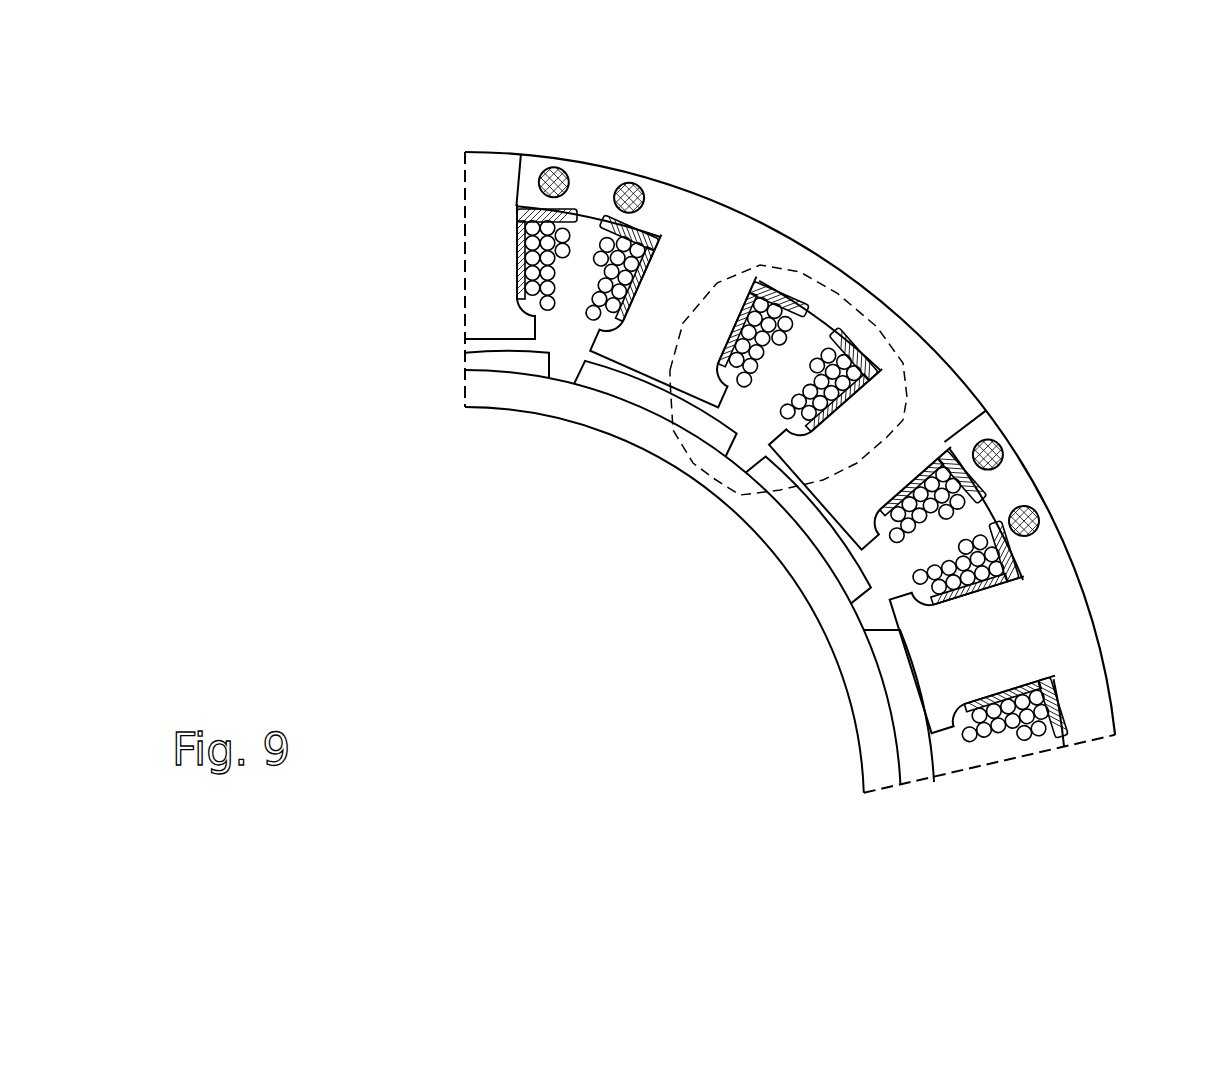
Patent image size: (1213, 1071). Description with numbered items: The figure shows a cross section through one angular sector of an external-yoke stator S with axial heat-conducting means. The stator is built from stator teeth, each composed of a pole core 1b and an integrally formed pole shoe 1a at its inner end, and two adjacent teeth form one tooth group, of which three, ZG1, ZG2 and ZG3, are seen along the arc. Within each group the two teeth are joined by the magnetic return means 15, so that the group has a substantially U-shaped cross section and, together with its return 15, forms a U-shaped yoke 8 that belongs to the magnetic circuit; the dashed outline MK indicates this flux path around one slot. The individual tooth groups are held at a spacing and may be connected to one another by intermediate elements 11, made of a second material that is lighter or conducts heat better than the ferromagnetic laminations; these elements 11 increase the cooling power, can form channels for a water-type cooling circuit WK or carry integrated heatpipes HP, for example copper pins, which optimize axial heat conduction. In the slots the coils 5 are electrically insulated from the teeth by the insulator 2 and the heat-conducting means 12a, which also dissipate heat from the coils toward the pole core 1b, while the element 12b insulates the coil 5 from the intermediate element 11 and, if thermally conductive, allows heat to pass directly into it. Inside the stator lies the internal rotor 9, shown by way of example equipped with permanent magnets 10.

The external-yoke stator S is at (1044, 331).
The yoke 8 is at (697, 205).
The magnetic return means 15 is at (797, 252).
The tooth group ZG1 is at (483, 175).
The tooth group ZG2 is at (747, 223).
The tooth group ZG3 is at (1075, 608).
The intermediate element 11 is at (597, 175).
The water-type cooling circuit WK is at (632, 192).
The heatpipe HP is at (990, 437).
The pole shoe 1a is at (475, 313).
The pole core 1b is at (690, 309).
The heat-conducting means 12a is at (459, 260).
The insulating element 12b is at (485, 219).
The coil 5 is at (853, 362).
The insulator 2 is at (1022, 678).
The magnetic circuit MK is at (830, 283).
The internal rotor 9 is at (790, 553).
The permanent magnet 10 is at (605, 382).